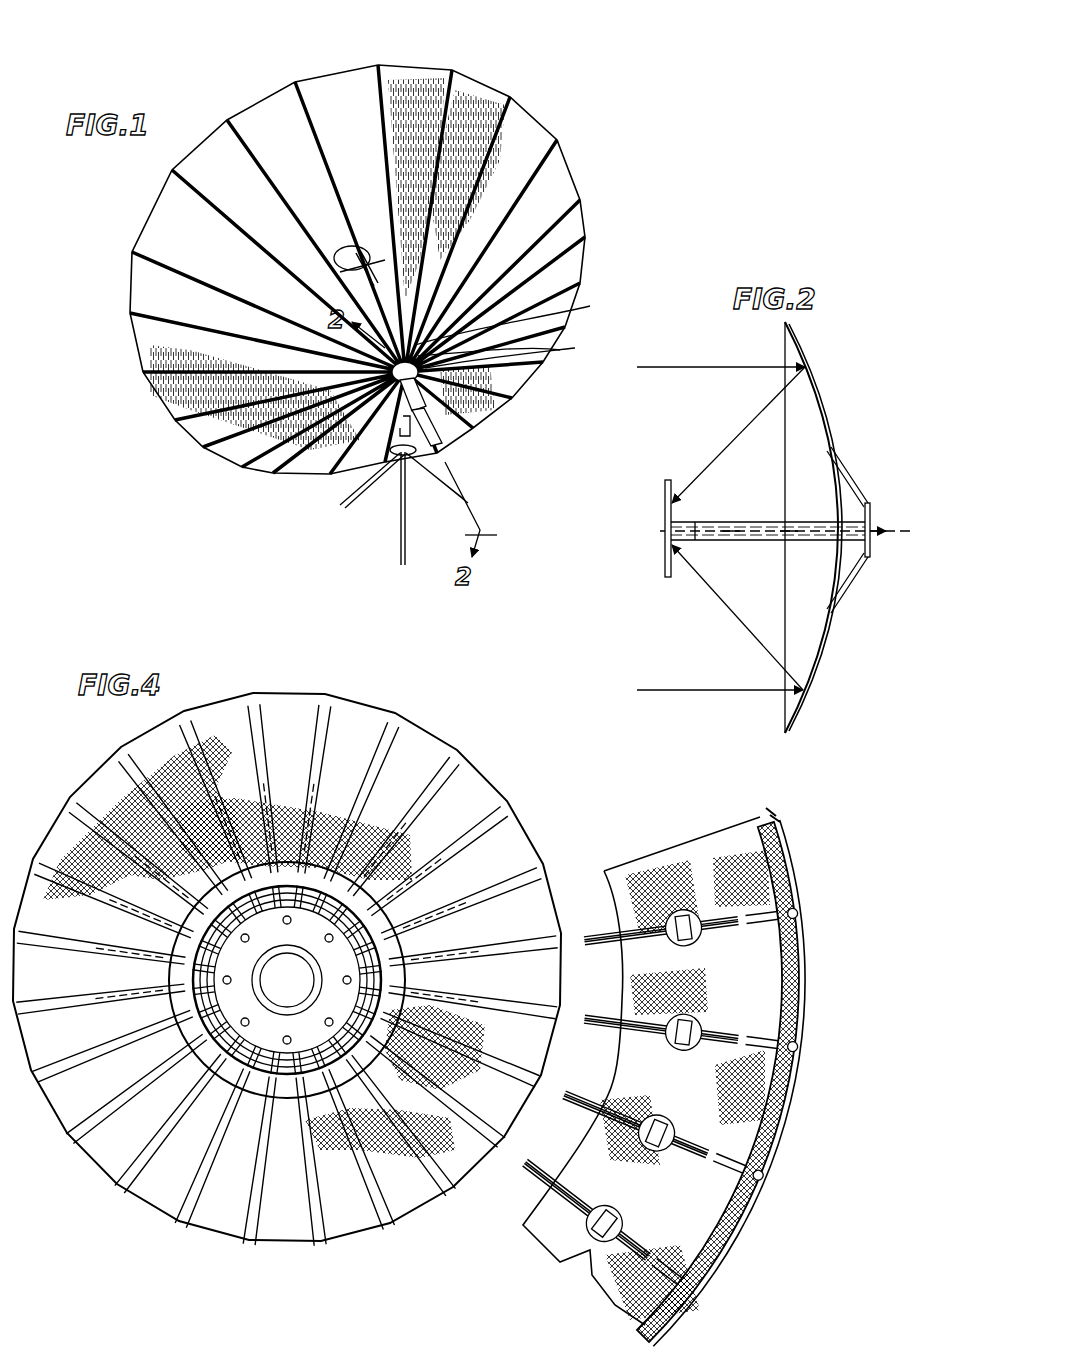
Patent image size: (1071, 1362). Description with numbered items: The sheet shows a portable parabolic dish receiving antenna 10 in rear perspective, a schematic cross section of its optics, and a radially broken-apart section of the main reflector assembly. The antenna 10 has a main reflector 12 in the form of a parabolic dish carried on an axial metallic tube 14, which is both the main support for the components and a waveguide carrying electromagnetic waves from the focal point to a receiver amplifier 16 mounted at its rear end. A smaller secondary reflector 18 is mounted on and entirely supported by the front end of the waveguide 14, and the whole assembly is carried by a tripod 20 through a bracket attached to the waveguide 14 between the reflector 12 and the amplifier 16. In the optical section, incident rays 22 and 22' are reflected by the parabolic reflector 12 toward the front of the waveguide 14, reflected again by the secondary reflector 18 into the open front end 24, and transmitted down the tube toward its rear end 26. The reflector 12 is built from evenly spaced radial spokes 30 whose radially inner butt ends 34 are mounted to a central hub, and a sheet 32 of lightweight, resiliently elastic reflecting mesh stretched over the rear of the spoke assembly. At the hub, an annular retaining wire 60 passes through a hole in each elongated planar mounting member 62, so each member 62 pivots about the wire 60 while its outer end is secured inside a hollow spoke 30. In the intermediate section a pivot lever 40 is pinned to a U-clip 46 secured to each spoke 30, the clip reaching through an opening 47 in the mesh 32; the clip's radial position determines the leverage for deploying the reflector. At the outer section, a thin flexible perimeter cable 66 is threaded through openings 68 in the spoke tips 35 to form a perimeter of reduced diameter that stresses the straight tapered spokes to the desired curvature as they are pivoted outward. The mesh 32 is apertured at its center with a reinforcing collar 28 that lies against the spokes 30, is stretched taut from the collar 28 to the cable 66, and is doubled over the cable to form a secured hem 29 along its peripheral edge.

In FIG. 1, the receiving antenna 10 is at (508, 82).
In FIG. 1, the main reflector 12 is at (122, 284).
In FIG. 2, the main reflector 12 is at (811, 373).
In FIG. 1, the axial metallic tube (waveguide) 14 is at (428, 388).
In FIG. 2, the axial metallic tube (waveguide) 14 is at (760, 538).
In FIG. 1, the receiver amplifier 16 is at (448, 445).
In FIG. 1, the secondary reflector 18 is at (345, 250).
In FIG. 2, the secondary reflector 18 is at (690, 542).
In FIG. 1, the tripod 20 is at (362, 520).
In FIG. 2, the incident ray 22 is at (721, 435).
In FIG. 2, the incident ray 22' is at (720, 617).
In FIG. 1, the open front end of the waveguide 24 is at (368, 242).
In FIG. 2, the open front end of the waveguide 24 is at (694, 527).
In FIG. 2, the rear end of the waveguide 26 is at (880, 520).
In FIG. 4, the reinforcing collar 28 is at (312, 878).
In FIG. 4, the hem 29 is at (688, 1300).
In FIG. 1, the radial spokes 30 is at (320, 88).
In FIG. 4, the radial spokes 30 is at (330, 705).
In FIG. 1, the sheet of reflecting mesh 32 is at (517, 142).
In FIG. 4, the sheet of reflecting mesh 32 is at (300, 1225).
In FIG. 4, the radially inner butt ends of the spokes 34 is at (230, 892).
In FIG. 4, the spoke tips 35 is at (802, 918).
In FIG. 1, the pivot lever (linkage rod) 40 is at (290, 506).
In FIG. 4, the pivot lever (linkage rod) 40 is at (615, 890).
In FIG. 4, the U-clip 46 is at (700, 948).
In FIG. 4, the opening in the mesh 47 is at (676, 916).
In FIG. 4, the annular retaining wire (ring) 60 is at (425, 990).
In FIG. 4, the mounting member 62 is at (445, 905).
In FIG. 1, the perimeter cable (wire) 66 is at (576, 348).
In FIG. 4, the perimeter cable (wire) 66 is at (780, 820).
In FIG. 4, the openings in the spoke tips 68 is at (805, 906).